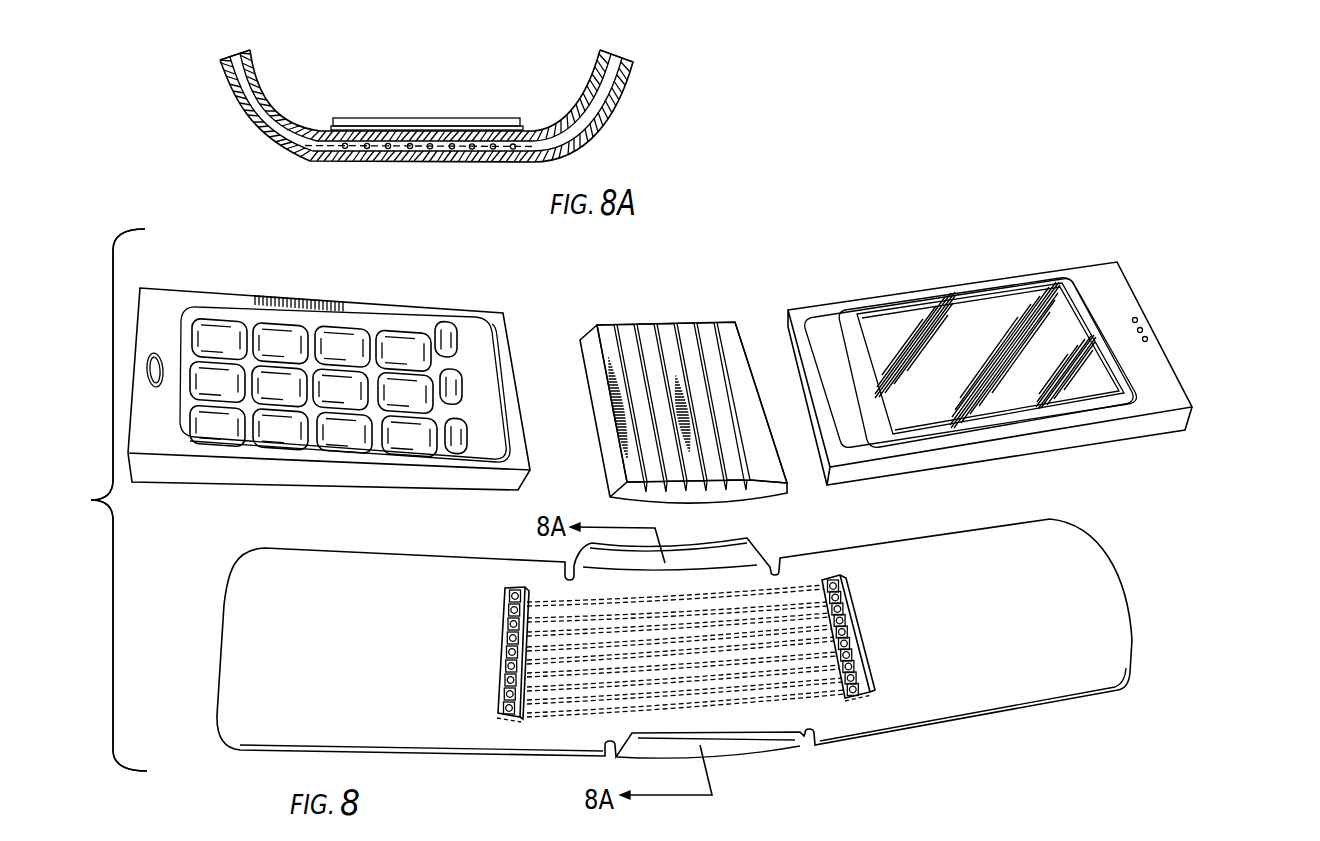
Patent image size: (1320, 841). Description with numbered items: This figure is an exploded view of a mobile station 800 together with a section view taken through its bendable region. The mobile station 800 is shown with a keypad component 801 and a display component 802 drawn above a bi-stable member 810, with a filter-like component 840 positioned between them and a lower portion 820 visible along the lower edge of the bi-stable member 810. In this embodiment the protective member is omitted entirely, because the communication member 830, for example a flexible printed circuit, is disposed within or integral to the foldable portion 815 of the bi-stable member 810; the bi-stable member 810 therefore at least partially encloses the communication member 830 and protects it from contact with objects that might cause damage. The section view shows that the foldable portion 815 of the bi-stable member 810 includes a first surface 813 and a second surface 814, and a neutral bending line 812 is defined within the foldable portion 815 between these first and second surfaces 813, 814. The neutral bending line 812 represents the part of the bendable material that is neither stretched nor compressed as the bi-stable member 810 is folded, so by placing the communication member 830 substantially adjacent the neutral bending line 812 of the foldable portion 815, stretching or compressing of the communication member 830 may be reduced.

In FIG. 8, the portable electronic device 800 is at (805, 252).
In FIG. 8, the keypad 801 is at (175, 298).
In FIG. 8, the display housing 802 is at (1150, 375).
In FIG. 8, the bi-stable member 810 is at (1043, 568).
In FIG. 8A, the neutral bending line 812 is at (265, 133).
In FIG. 8A, the first surface 813 is at (325, 126).
In FIG. 8A, the second surface 814 is at (435, 163).
In FIG. 8A, the foldable portion 815 is at (312, 70).
In FIG. 8, the foldable portion 815 is at (616, 580).
In FIG. 8, the lower housing portion 820 is at (742, 747).
In FIG. 8A, the communication member 830 is at (432, 140).
In FIG. 8, the communication member 830 is at (795, 600).
In FIG. 8, the vent filter 840 is at (665, 334).